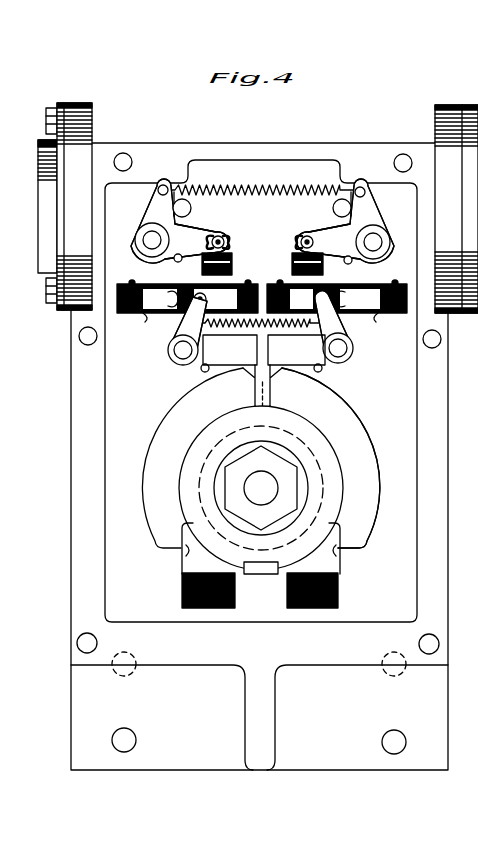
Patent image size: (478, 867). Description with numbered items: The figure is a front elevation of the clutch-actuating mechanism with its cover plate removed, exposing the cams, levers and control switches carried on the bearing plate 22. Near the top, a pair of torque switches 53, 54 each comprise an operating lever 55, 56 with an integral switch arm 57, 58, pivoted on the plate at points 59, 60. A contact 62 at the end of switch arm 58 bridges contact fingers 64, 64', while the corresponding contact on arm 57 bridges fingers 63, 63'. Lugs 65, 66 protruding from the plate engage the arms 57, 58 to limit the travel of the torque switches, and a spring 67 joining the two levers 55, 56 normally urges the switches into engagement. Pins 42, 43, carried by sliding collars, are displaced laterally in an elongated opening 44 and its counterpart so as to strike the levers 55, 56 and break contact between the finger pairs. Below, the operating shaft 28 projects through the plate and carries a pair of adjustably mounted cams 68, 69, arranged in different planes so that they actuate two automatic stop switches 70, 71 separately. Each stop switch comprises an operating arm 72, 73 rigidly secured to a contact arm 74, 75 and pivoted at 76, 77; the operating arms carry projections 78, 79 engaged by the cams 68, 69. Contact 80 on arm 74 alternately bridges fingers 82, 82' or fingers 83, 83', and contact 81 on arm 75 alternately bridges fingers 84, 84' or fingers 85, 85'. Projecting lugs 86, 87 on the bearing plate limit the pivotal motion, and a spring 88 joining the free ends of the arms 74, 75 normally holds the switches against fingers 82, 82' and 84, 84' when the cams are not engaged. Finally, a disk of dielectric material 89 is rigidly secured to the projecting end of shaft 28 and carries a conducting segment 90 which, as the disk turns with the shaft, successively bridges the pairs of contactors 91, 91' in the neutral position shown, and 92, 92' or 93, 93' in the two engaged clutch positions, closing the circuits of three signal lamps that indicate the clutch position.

The bearing plate 22 is at (112, 393).
The operating shaft 28 is at (272, 487).
The pin 42 is at (333, 208).
The pin 43 is at (192, 208).
The elongated opening 44 is at (156, 207).
The torque switch 53 is at (384, 219).
The torque switch 54 is at (149, 221).
The operating lever 55 is at (366, 192).
The operating lever 56 is at (158, 191).
The switch arm 57 is at (343, 228).
The switch arm 58 is at (184, 236).
The pivot point 59 is at (376, 242).
The pivot point 60 is at (150, 240).
The contact 62 is at (220, 236).
The contact finger 63 is at (325, 243).
The contact finger 63' is at (287, 239).
The contact finger 64 is at (245, 239).
The contact finger 64' is at (196, 244).
The lug 65 is at (352, 261).
The lug 66 is at (173, 260).
The spring 67 is at (299, 189).
The cam 68 is at (364, 427).
The cam 69 is at (160, 422).
The automatic stop switch 70 is at (362, 351).
The automatic stop switch 71 is at (170, 353).
The operating arm 72 is at (296, 350).
The operating arm 73 is at (230, 350).
The contact arm 74 is at (341, 323).
The contact arm 75 is at (190, 327).
The pivot 76 is at (345, 355).
The pivot 77 is at (183, 355).
The projection 78 is at (276, 370).
The projection 79 is at (249, 373).
The contact 80 is at (351, 299).
The contact 81 is at (214, 300).
The contact finger 82 is at (331, 284).
The contact finger 82' is at (351, 322).
The contact finger 83 is at (337, 283).
The contact finger 83' is at (392, 322).
The contact finger 84 is at (188, 283).
The contact finger 84' is at (174, 320).
The contact finger 85 is at (164, 299).
The contact finger 85' is at (133, 325).
The projecting lug 86 is at (322, 371).
The projecting lug 87 is at (201, 370).
The spring 88 is at (257, 329).
The disk of dielectric material 89 is at (305, 428).
The conducting segment 90 is at (261, 575).
The contactor 91 is at (219, 595).
The contactor 91' is at (301, 593).
The contactor 92 is at (353, 548).
The contactor 92' is at (323, 559).
The contactor 93 is at (173, 548).
The contactor 93' is at (202, 559).